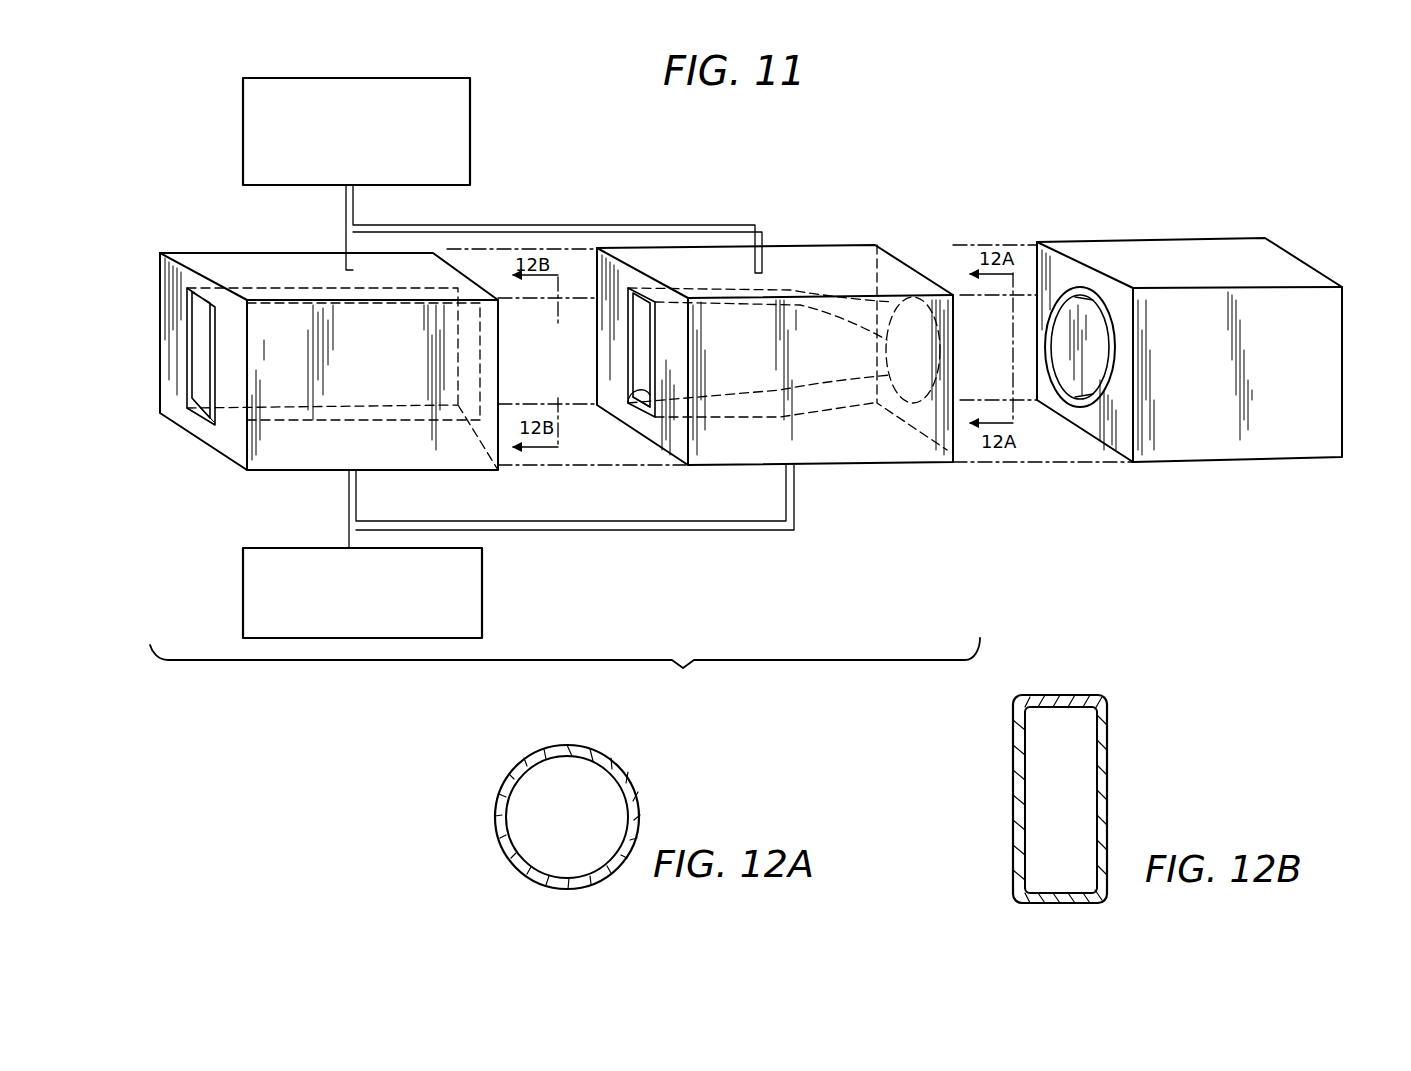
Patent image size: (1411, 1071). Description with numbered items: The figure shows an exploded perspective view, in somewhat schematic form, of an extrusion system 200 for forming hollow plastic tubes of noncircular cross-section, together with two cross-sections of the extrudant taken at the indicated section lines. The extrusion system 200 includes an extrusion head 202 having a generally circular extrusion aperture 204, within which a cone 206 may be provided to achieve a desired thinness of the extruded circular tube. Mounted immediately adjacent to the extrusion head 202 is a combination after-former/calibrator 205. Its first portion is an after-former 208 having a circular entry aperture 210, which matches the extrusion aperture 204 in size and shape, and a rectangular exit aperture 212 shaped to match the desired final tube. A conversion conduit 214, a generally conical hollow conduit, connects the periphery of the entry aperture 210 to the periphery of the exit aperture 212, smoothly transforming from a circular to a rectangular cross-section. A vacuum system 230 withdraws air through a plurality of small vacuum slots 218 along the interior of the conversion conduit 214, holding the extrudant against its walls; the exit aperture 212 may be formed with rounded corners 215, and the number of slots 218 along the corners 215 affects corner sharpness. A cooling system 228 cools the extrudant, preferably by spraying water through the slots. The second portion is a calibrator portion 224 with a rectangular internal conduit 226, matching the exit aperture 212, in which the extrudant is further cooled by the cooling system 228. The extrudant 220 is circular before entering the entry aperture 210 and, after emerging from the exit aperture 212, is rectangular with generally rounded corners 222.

In FIG. 11, the extrusion system 200 is at (910, 155).
In FIG. 11, the extrusion head 202 is at (1090, 250).
In FIG. 11, the extrusion aperture 204 is at (1078, 403).
In FIG. 11, the cone 206 is at (1102, 302).
In FIG. 11, the after-former 208 is at (722, 264).
In FIG. 11, the entry aperture 210 is at (963, 312).
In FIG. 11, the exit aperture 212 is at (640, 333).
In FIG. 11, the conversion conduit 214 is at (815, 290).
In FIG. 11, the rounded corners 215 is at (630, 390).
In FIG. 11, the vacuum slots 218 is at (636, 413).
In FIG. 12A, the extrudant 220 is at (637, 803).
In FIG. 12B, the extrudant 220 is at (1106, 790).
In FIG. 12B, the rounded corners 222 is at (1108, 758).
In FIG. 11, the calibrator portion 224 is at (232, 268).
In FIG. 11, the rectangular internal conduit 226 is at (192, 397).
In FIG. 11, the cooling system 228 is at (471, 117).
In FIG. 11, the vacuum system 230 is at (483, 596).
In FIG. 11, the combination after-former/calibrator 205 is at (565, 667).